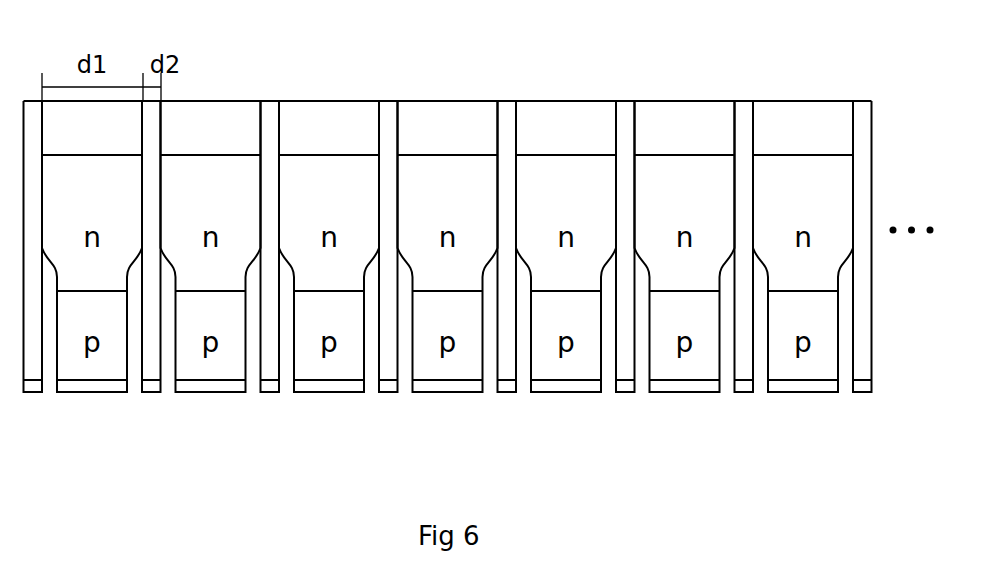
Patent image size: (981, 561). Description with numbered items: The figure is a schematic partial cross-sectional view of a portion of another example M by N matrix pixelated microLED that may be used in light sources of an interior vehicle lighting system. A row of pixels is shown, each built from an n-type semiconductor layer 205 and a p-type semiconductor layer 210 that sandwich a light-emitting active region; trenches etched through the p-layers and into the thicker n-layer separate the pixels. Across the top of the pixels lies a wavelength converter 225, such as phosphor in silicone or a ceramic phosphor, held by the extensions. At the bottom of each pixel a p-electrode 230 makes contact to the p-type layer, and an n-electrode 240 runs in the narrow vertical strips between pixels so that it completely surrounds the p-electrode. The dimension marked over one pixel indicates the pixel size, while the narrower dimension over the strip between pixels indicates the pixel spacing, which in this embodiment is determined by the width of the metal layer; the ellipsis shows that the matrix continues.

The n-type semiconductor layer 205 is at (560, 175).
The p-type semiconductor layer 210 is at (701, 361).
The wavelength converter 225 is at (432, 119).
The p-electrode 230 is at (563, 383).
The n-electrode 240 is at (152, 376).